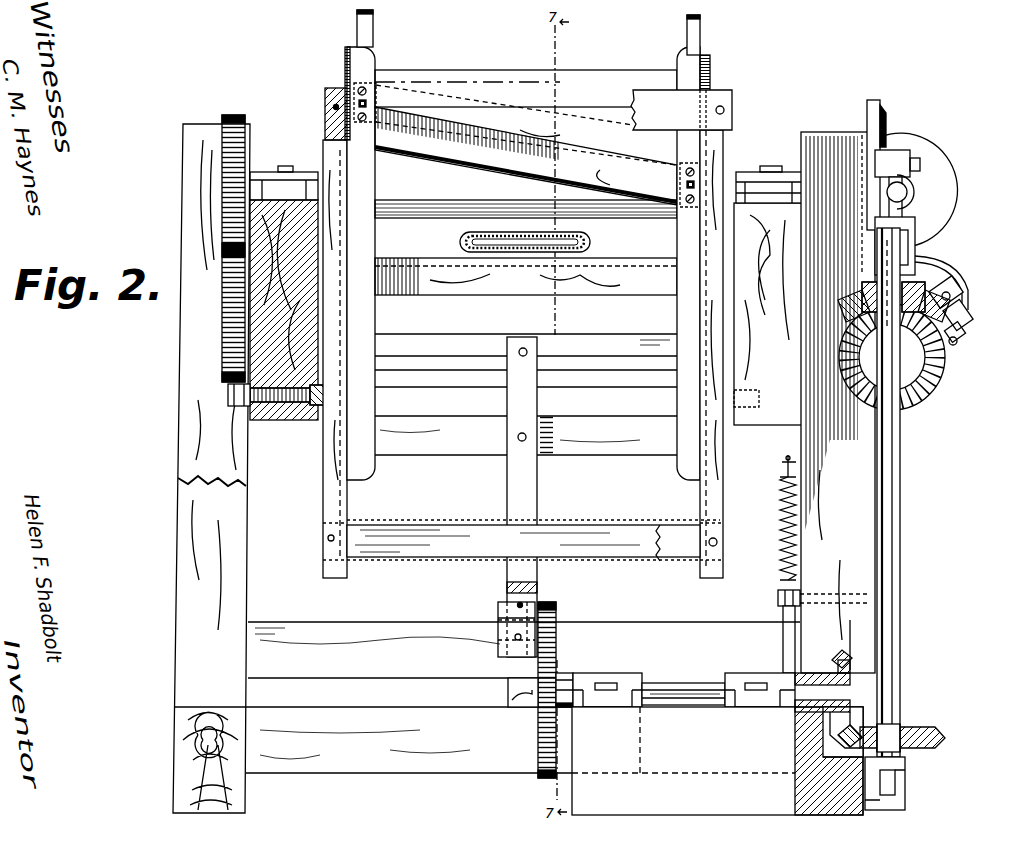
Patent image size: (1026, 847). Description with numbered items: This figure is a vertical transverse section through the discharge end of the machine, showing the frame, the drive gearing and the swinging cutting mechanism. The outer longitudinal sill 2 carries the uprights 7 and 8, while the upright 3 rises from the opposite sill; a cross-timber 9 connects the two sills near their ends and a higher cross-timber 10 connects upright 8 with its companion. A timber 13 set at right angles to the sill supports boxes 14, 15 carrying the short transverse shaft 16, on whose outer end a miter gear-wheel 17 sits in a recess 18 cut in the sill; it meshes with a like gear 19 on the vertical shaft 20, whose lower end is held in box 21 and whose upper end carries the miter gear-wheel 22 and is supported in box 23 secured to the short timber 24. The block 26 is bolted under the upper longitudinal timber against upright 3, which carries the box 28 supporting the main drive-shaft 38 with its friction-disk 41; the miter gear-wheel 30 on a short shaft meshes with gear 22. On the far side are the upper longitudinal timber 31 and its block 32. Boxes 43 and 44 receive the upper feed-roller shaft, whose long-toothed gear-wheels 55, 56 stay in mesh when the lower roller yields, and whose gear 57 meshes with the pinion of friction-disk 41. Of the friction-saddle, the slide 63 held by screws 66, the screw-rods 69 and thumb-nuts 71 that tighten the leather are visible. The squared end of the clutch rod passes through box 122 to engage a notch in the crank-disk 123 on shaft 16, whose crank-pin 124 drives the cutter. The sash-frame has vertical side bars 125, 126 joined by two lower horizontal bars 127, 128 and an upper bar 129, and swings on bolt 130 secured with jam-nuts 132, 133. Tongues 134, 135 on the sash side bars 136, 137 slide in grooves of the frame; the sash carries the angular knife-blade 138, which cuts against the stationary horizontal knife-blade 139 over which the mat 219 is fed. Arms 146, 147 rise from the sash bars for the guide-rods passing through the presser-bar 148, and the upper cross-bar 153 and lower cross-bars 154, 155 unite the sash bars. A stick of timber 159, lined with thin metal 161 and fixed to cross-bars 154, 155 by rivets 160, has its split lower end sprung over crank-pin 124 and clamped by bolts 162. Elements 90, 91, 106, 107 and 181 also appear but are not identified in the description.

The outer longitudinal sill 2 is at (175, 762).
The upright 3 is at (875, 549).
The upright 7 is at (522, 680).
The upright 8 is at (211, 468).
The cross-timber 9 is at (409, 740).
The cross-timber 10 is at (432, 624).
The timber 13 is at (717, 761).
The box 14 is at (738, 668).
The box 15 is at (635, 668).
The short transverse shaft 16 is at (690, 678).
The miter gear-wheel 17 is at (828, 694).
The recess in sill 18 is at (829, 761).
The miter gear 19 is at (925, 728).
The vertical shaft 20 is at (898, 690).
The box 21 is at (905, 770).
The miter gear-wheel 22 is at (941, 283).
The box 23 is at (915, 252).
The short timber 24 is at (865, 236).
The block 26 is at (766, 354).
The box 28 is at (915, 158).
The miter gear-wheel 30 is at (945, 366).
The upper longitudinal timber 31 is at (284, 310).
The block 32 is at (294, 386).
The main drive-shaft 38 is at (900, 192).
The friction-disk 41 is at (934, 212).
The box 43 is at (772, 172).
The box 44 is at (300, 171).
The gear-wheel 55 is at (222, 182).
The gear-wheel 56 is at (222, 331).
The gear 57 is at (882, 113).
The slide-piece 63 is at (958, 284).
The screws or bolts 66 is at (968, 310).
The screw-rods 69 is at (963, 326).
The thumb-nuts 71 is at (958, 340).
The bolt 90 is at (778, 600).
The rod 91 is at (783, 649).
The rod 106 is at (783, 463).
The spring 107 is at (780, 541).
The box 122 is at (530, 695).
The crank-disk 123 is at (559, 654).
The crank-pin 124 is at (498, 618).
The vertical side bar of sash-frame 125 is at (318, 516).
The vertical side bar of sash-frame 126 is at (729, 509).
The lower horizontal bar 127 is at (672, 562).
The lower horizontal bar 128 is at (625, 560).
The upper horizontal bar 129 is at (681, 110).
The bolt 130 is at (266, 430).
The jam-nut 132 is at (230, 398).
The jam-nut 133 is at (812, 420).
The longitudinal tongue 134 is at (347, 58).
The longitudinal tongue 135 is at (712, 74).
The sash side bar 136 is at (358, 442).
The sash side bar 137 is at (680, 478).
The angular knife-blade 138 is at (526, 156).
The stationary horizontal knife-blade 139 is at (537, 276).
The arm 146 is at (374, 44).
The arm 147 is at (687, 45).
The presser-bar 148 is at (450, 194).
The upper cross-bar 153 is at (526, 88).
The lower cross-bar 154 is at (612, 333).
The lower cross-bar 155 is at (620, 418).
The stick of timber 159 is at (506, 584).
The flush-head rivets 160 is at (528, 352).
The thin metal lining 161 is at (505, 491).
The bolts 162 is at (521, 605).
The bolt 181 is at (819, 401).
The mat 219 is at (597, 244).